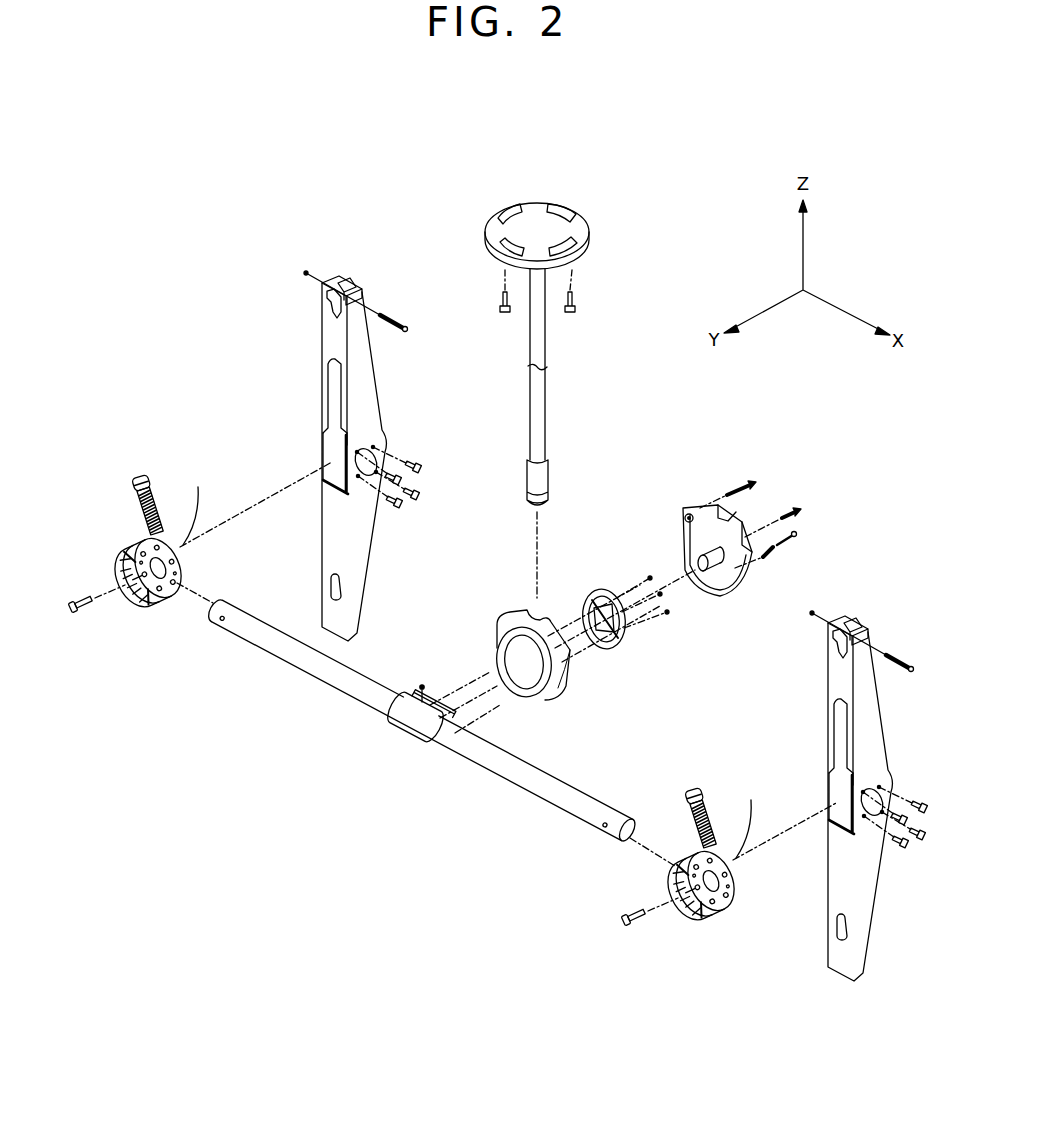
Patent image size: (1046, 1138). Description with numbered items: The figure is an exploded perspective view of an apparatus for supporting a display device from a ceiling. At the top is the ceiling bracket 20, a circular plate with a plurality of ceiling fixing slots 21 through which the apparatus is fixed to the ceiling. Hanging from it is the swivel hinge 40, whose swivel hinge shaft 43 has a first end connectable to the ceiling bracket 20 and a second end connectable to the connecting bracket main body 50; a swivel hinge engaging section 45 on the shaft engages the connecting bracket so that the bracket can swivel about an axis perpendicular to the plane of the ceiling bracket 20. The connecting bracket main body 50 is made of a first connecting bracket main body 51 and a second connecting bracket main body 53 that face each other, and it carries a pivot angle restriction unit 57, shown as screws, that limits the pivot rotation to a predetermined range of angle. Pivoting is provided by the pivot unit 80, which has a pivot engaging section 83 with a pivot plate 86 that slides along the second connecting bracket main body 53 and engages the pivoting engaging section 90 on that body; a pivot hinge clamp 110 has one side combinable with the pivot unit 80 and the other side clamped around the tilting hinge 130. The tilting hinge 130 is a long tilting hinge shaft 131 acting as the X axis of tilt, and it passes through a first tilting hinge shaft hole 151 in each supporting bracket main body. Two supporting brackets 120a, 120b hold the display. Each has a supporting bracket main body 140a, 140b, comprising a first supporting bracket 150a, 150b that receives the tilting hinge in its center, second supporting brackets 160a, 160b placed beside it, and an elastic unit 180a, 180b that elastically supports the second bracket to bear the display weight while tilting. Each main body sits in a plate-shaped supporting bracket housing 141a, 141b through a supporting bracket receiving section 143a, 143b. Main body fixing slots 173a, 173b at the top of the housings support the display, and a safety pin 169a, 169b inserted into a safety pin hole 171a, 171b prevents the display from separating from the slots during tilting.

The ceiling bracket 20 is at (562, 205).
The ceiling fixing slots 21 is at (575, 212).
The swivel hinge 40 is at (571, 323).
The swivel hinge shaft 43 is at (548, 397).
The swivel hinge engaging section 45 is at (571, 482).
The connecting bracket main body 50 is at (702, 610).
The first connecting bracket main body 51 is at (740, 597).
The second connecting bracket main body 53 is at (587, 698).
The pivot angle restriction unit 57 is at (795, 533).
The pivot unit 80 is at (543, 605).
The pivot engaging section 83 is at (567, 585).
The pivot plate 86 is at (600, 592).
The pivoting engaging section 90 is at (497, 660).
The pivot hinge clamp 110 is at (410, 722).
The supporting bracket 120a is at (245, 481).
The supporting bracket 120b is at (775, 811).
The tilting hinge 130 is at (385, 638).
The tilting hinge shaft 131 is at (262, 612).
The supporting bracket main body 140a is at (124, 630).
The supporting bracket main body 140b is at (678, 915).
The supporting bracket housing 141a is at (330, 625).
The supporting bracket housing 141b is at (860, 968).
The supporting bracket receiving section 143a is at (333, 463).
The supporting bracket receiving section 143b is at (840, 803).
The first supporting bracket 150a is at (128, 592).
The first supporting bracket 150b is at (681, 905).
The first tilting hinge shaft hole 151 is at (176, 543).
The second supporting bracket 160a is at (120, 582).
The second supporting bracket 160b is at (673, 895).
The safety pin 169a is at (395, 315).
The safety pin 169b is at (900, 656).
The safety pin hole 171a is at (355, 293).
The safety pin hole 171b is at (860, 632).
The main body fixing slot 173a is at (338, 282).
The main body fixing slot 173b is at (844, 622).
The elastic unit 180a is at (198, 487).
The elastic unit 180b is at (751, 800).